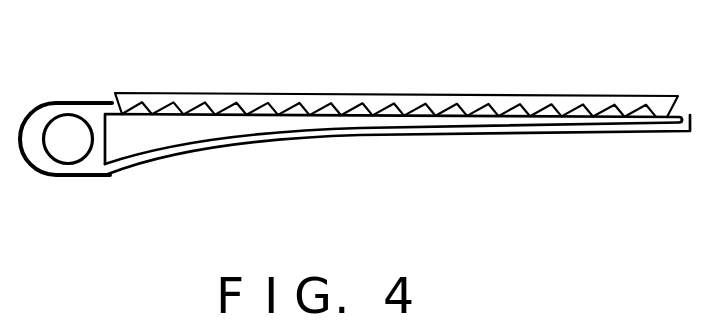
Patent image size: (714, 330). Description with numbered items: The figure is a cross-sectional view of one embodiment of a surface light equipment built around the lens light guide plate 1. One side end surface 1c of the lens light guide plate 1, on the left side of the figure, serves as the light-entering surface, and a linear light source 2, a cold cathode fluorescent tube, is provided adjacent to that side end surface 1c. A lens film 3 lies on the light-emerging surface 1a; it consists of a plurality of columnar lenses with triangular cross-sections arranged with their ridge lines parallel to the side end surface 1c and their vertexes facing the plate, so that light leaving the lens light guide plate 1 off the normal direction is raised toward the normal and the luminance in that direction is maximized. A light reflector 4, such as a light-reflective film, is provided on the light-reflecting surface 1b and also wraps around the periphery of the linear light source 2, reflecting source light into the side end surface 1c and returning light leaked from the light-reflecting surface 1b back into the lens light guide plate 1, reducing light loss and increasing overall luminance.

The lens light guide plate 1 is at (150, 135).
The light-emerging surface 1a is at (198, 112).
The light-reflecting surface 1b is at (281, 134).
The side end surface 1c is at (100, 126).
The linear light source 2 is at (67, 155).
The lens film 3 is at (567, 105).
The light reflector 4 is at (457, 136).